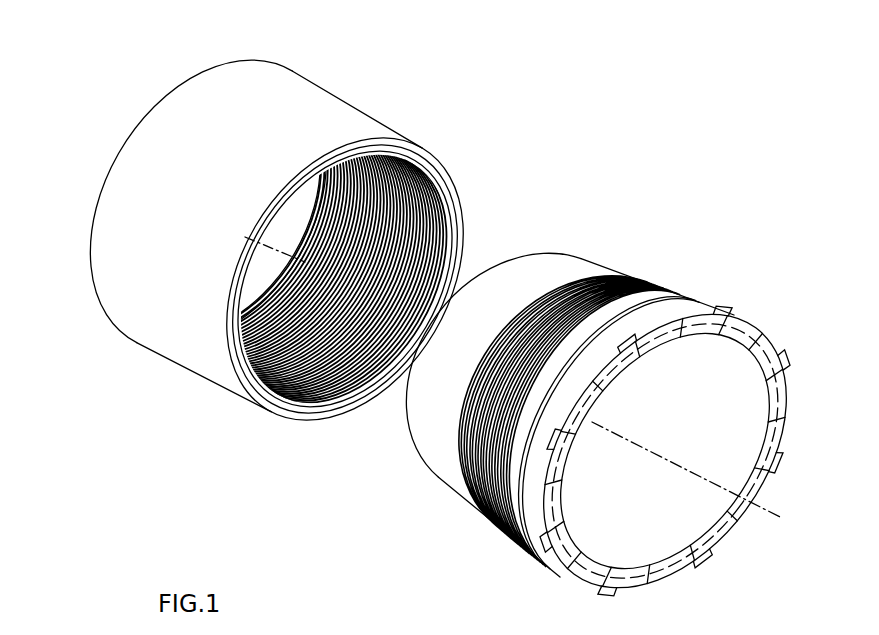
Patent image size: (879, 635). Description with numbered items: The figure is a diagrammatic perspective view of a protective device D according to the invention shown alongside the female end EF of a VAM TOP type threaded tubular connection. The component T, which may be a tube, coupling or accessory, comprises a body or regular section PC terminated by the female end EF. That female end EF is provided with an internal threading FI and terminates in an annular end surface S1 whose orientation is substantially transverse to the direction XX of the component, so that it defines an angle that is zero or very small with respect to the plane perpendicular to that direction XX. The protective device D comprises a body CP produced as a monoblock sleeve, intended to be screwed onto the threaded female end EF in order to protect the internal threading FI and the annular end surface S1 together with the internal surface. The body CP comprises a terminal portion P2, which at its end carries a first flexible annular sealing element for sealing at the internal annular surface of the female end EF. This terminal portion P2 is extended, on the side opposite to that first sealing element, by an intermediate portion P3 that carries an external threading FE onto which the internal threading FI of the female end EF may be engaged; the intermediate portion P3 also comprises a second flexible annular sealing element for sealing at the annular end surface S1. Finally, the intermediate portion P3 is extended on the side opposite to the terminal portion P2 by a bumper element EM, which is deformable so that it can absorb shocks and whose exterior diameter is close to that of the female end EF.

The component T is at (155, 111).
The body or regular section PC is at (285, 66).
The female end EF is at (346, 104).
The internal threading FI is at (456, 220).
The annular end surface S1 is at (290, 421).
The protective device D is at (715, 259).
The terminal portion P2 is at (437, 464).
The intermediate portion P3 is at (489, 532).
The external threading FE is at (645, 274).
The body CP is at (588, 259).
The bumper element EM is at (720, 309).
The direction of the component XX is at (785, 523).